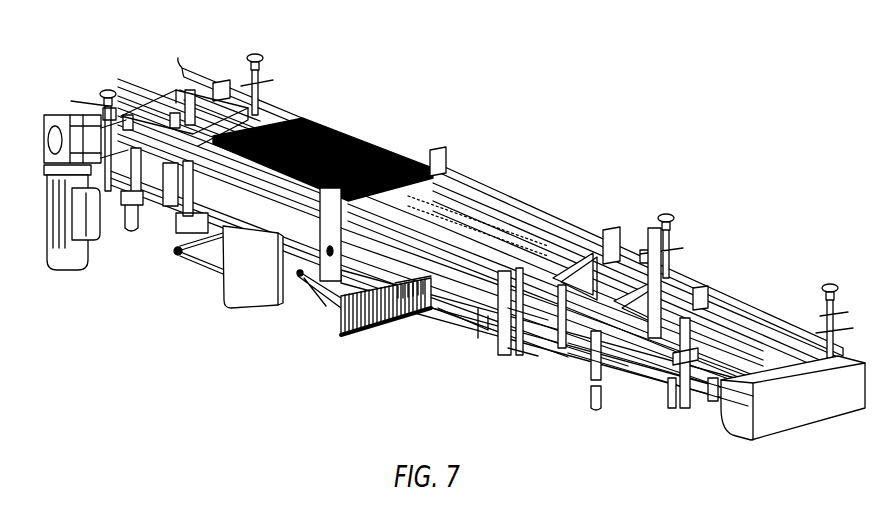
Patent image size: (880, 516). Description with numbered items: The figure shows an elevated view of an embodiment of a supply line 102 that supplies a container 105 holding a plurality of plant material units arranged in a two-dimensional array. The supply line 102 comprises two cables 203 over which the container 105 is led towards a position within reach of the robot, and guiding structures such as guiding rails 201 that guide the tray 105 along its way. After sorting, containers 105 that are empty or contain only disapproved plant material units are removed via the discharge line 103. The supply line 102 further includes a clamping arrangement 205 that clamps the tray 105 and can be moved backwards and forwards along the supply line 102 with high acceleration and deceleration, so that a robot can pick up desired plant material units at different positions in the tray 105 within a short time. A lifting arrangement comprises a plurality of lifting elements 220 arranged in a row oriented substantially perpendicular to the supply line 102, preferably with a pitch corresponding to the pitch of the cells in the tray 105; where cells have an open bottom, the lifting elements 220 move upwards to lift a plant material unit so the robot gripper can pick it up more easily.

The supply line 102 is at (616, 195).
The discharge line 103 is at (138, 97).
The container 105 is at (330, 120).
The guiding rails 201 is at (747, 293).
The cables 203 is at (690, 292).
The clamping arrangement 205 is at (245, 243).
The lifting elements 220 is at (362, 323).